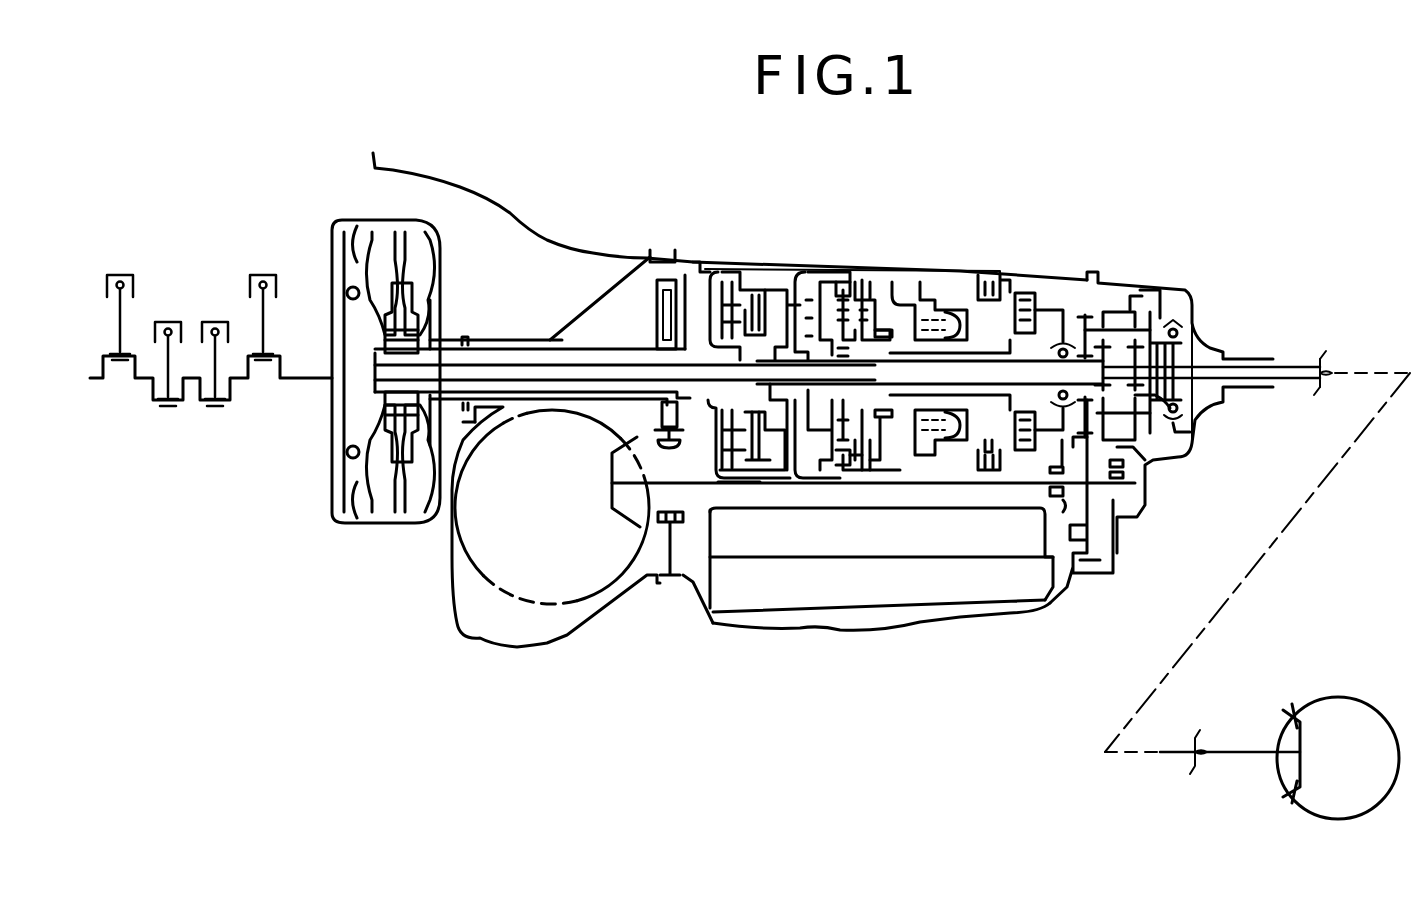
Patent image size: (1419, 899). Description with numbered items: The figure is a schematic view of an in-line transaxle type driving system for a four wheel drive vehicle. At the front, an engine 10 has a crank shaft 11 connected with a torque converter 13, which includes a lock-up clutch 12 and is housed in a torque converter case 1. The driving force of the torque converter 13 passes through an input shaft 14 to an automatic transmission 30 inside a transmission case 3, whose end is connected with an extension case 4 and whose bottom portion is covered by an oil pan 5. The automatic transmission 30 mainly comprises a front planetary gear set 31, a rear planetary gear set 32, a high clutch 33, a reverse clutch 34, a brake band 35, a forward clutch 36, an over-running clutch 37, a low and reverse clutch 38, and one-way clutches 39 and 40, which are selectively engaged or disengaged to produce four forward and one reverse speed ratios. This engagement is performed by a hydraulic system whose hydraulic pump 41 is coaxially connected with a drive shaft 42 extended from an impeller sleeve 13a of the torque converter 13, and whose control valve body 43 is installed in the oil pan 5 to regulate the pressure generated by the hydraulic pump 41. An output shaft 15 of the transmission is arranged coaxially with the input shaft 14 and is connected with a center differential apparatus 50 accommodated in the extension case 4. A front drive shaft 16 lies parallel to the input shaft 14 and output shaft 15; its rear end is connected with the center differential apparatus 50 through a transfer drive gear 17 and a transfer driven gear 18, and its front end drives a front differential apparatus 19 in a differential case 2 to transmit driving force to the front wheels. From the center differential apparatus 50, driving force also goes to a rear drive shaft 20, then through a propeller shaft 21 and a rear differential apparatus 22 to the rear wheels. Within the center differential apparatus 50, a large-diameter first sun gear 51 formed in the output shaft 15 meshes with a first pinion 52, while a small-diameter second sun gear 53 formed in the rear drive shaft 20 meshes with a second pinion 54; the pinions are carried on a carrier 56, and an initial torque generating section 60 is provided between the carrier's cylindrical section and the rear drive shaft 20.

The torque converter case 1 is at (462, 192).
The differential case 2 is at (570, 640).
The transmission case 3 is at (690, 262).
The extension case 4 is at (1107, 312).
The oil pan 5 is at (962, 615).
The engine 10 is at (195, 285).
The crank shaft 11 is at (291, 382).
The lock-up clutch 12 is at (345, 265).
The torque converter 13 is at (438, 250).
The impeller sleeve 13a is at (440, 318).
The input shaft 14 is at (522, 360).
The output shaft 15 is at (1040, 358).
The front drive shaft 16 is at (883, 485).
The transfer drive gear 17 is at (1072, 350).
The transfer driven gear 18 is at (1113, 553).
The front differential apparatus 19 is at (608, 588).
The rear drive shaft 20 is at (1278, 368).
The propeller shaft 21 is at (1370, 370).
The rear differential apparatus 22 is at (1338, 692).
The automatic transmission 30 is at (888, 235).
The front planetary gear set 31 is at (808, 395).
The rear planetary gear set 32 is at (841, 395).
The high clutch 33 is at (805, 288).
The reverse clutch 34 is at (758, 288).
The brake band 35 is at (740, 282).
The forward clutch 36 is at (845, 285).
The over-running clutch 37 is at (898, 312).
The low and reverse clutch 38 is at (996, 298).
The one-way clutch 39 is at (1012, 320).
The one-way clutch 40 is at (950, 292).
The hydraulic pump 41 is at (655, 320).
The drive shaft 42 is at (552, 345).
The control valve body 43 is at (881, 558).
The center differential apparatus 50 is at (1152, 312).
The first sun gear 51 is at (1150, 435).
The first pinion 52 is at (1127, 325).
The second sun gear 53 is at (1172, 396).
The second pinion 54 is at (1142, 290).
The carrier 56 is at (1103, 417).
The initial torque generating section 60 is at (1200, 358).